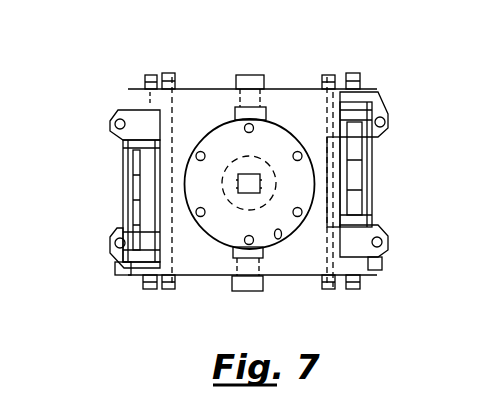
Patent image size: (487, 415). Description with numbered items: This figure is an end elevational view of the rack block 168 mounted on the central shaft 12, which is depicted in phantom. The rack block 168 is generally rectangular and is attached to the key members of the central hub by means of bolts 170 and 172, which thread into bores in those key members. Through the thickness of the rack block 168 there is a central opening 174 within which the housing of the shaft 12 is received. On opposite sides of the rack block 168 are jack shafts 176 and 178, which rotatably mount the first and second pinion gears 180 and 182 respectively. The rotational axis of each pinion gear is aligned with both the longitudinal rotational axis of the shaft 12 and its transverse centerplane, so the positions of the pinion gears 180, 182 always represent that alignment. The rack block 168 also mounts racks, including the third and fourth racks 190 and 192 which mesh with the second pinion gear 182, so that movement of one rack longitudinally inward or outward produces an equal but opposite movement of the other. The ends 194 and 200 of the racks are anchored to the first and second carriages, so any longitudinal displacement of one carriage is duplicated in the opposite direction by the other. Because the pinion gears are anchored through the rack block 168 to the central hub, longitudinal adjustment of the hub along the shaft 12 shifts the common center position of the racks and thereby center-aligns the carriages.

The shaft 12 is at (296, 191).
The rack block 168 is at (193, 281).
The bolt 170 is at (250, 80).
The bolt 172 is at (250, 283).
The central opening 174 is at (280, 240).
The jack shaft 176 is at (372, 186).
The jack shaft 178 is at (150, 178).
The first pinion gear 180 is at (352, 152).
The second pinion gear 182 is at (150, 204).
The third rack 190 is at (372, 249).
The fourth rack 192 is at (118, 250).
The rack end 194 is at (132, 119).
The rack end 200 is at (384, 108).